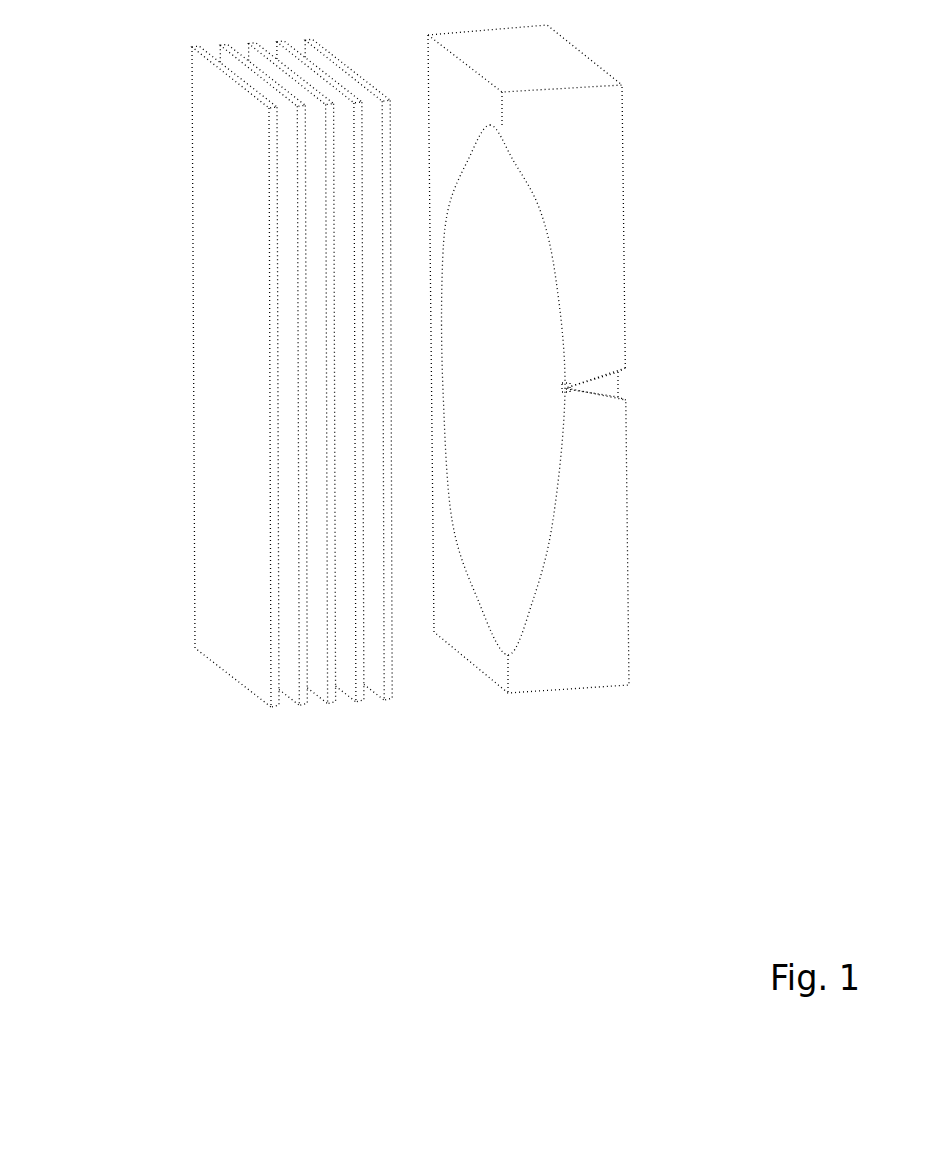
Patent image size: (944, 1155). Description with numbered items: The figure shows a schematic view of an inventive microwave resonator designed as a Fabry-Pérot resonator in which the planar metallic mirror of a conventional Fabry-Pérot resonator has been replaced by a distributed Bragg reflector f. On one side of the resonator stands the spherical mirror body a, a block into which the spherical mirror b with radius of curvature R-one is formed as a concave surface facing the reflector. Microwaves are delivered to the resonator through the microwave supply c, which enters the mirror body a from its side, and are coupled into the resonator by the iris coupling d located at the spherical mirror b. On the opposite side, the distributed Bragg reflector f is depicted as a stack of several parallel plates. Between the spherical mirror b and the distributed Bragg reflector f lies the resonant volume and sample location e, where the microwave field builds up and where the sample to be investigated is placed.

The spherical mirror body a is at (593, 122).
The spherical mirror b is at (520, 297).
The microwave supply c is at (623, 382).
The iris coupling d is at (567, 390).
The resonant volume and sample location e is at (393, 399).
The distributed Bragg reflector f is at (225, 218).